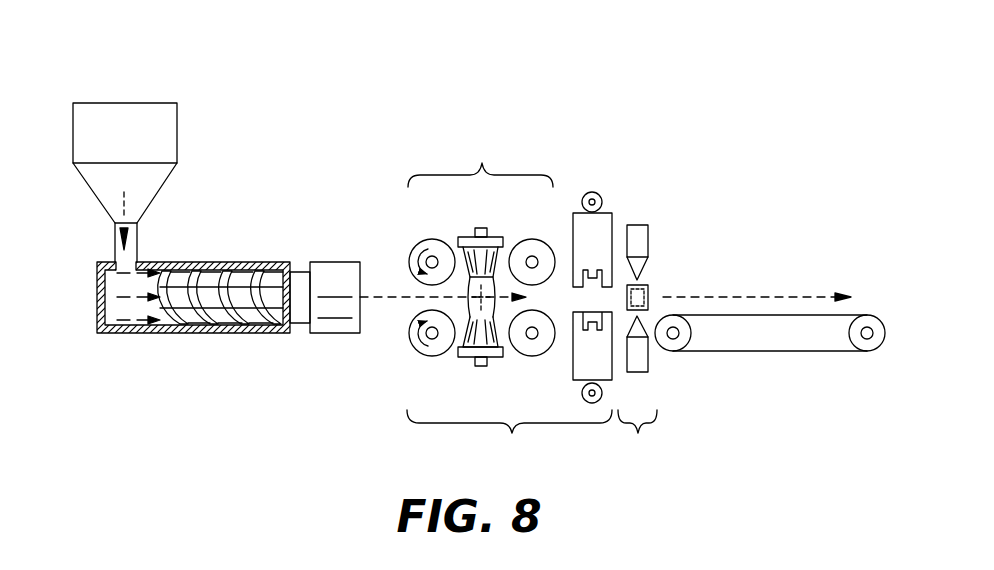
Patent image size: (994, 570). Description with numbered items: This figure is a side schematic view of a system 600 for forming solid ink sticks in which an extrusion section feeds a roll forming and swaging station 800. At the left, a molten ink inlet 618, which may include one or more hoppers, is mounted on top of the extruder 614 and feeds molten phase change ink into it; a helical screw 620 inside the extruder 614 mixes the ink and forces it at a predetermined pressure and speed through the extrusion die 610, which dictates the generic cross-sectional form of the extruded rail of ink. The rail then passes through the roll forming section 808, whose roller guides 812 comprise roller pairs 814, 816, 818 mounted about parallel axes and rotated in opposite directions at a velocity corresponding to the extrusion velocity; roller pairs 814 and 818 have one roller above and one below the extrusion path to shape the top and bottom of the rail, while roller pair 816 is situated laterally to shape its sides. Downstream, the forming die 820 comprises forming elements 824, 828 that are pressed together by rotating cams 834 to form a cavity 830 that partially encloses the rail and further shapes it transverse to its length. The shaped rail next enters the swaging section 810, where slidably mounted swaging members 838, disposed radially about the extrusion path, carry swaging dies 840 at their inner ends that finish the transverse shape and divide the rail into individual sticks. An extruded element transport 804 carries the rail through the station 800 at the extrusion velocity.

The extruder system 600 is at (243, 52).
The roll forming and swaging station 800 is at (465, 52).
The molten ink inlet 618 is at (178, 133).
The screw 620 is at (220, 280).
The extruder 614 is at (228, 262).
The extrusion die 610 is at (322, 262).
The roller guides 812 is at (480, 161).
The roller pair 814 is at (429, 355).
The roller pair 816 is at (472, 238).
The roller pair 818 is at (522, 356).
The cavity 830 is at (582, 302).
The forming die 820 is at (600, 143).
The forming element 824 is at (603, 232).
The forming element 828 is at (578, 340).
The cams 834 is at (589, 192).
The swaging members 838 is at (644, 247).
The swaging dies 840 is at (639, 276).
The extruded element transport 804 is at (755, 358).
The roll forming section 808 is at (509, 438).
The swaging section 810 is at (637, 438).